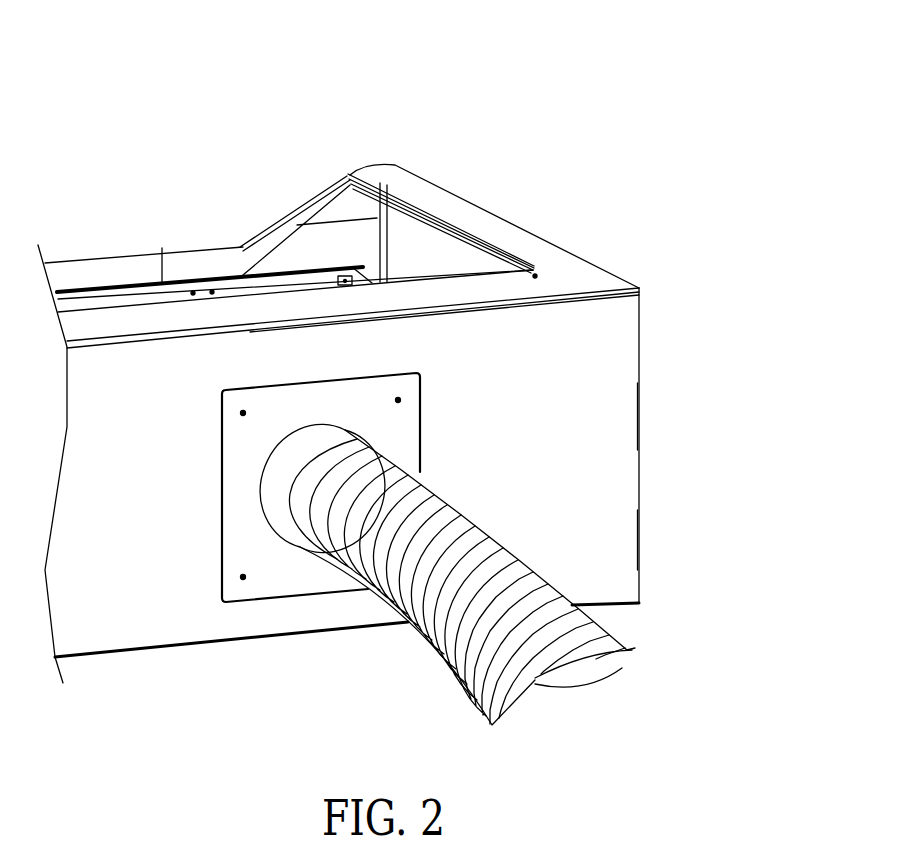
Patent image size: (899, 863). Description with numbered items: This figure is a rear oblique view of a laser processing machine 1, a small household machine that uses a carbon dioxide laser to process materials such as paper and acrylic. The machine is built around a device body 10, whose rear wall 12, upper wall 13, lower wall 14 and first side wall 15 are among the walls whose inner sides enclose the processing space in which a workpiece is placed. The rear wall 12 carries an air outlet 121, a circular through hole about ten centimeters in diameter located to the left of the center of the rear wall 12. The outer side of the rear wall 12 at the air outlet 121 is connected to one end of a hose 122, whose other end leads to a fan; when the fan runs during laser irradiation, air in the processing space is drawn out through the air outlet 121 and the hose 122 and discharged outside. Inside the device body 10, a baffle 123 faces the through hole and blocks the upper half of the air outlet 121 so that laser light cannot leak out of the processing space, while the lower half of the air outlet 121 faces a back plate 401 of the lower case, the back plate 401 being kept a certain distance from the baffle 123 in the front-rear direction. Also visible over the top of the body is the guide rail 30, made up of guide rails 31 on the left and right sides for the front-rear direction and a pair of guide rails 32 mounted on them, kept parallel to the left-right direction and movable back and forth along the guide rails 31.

The laser processing machine 1 is at (583, 85).
The device body 10 is at (672, 272).
The rear wall 12 is at (621, 372).
The upper wall 13 is at (520, 227).
The lower wall 14 is at (145, 657).
The first side wall 15 is at (640, 462).
The guide rail 30 is at (365, 63).
The guide rails 31 is at (372, 172).
The guide rails 32 is at (163, 250).
The air outlet 121 is at (340, 432).
The hose 122 is at (480, 517).
The baffle 123 is at (306, 555).
The back plate 401 is at (427, 438).